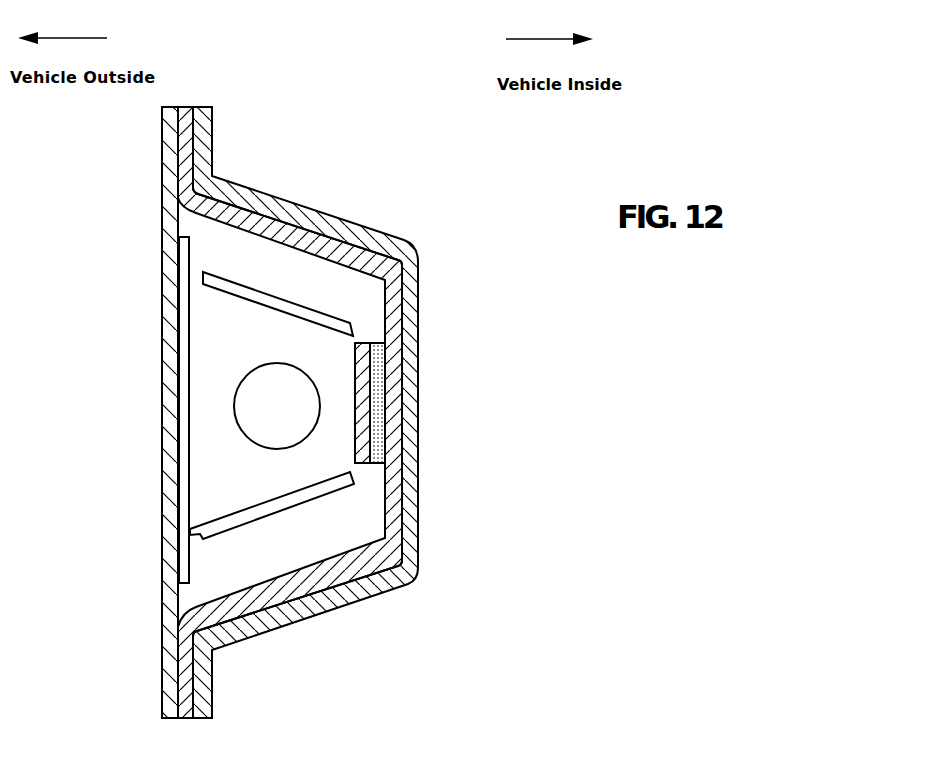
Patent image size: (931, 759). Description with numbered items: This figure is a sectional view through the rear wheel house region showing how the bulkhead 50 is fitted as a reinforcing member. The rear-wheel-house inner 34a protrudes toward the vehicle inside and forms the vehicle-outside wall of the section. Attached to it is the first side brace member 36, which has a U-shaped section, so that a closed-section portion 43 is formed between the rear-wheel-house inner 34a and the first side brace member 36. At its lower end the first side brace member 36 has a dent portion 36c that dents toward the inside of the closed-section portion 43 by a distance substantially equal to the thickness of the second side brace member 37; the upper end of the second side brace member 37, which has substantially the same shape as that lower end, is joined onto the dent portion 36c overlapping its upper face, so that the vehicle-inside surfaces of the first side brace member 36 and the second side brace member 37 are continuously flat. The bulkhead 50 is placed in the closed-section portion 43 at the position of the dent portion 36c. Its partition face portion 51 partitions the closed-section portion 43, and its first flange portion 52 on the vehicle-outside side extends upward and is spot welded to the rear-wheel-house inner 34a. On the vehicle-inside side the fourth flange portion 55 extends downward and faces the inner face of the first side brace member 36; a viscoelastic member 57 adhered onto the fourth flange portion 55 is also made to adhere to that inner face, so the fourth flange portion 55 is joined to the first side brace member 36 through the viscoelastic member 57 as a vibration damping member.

The rear-wheel-house inner 34a is at (162, 222).
The first side brace member 36 is at (310, 250).
The dent portion 36c is at (406, 497).
The second side brace member 37 is at (418, 288).
The closed-section portion 43 is at (298, 548).
The bulkhead 50 is at (221, 264).
The partition face portion 51 is at (212, 480).
The first flange portion 52 is at (184, 556).
The fourth flange portion 55 is at (366, 342).
The viscoelastic member 57 is at (383, 413).